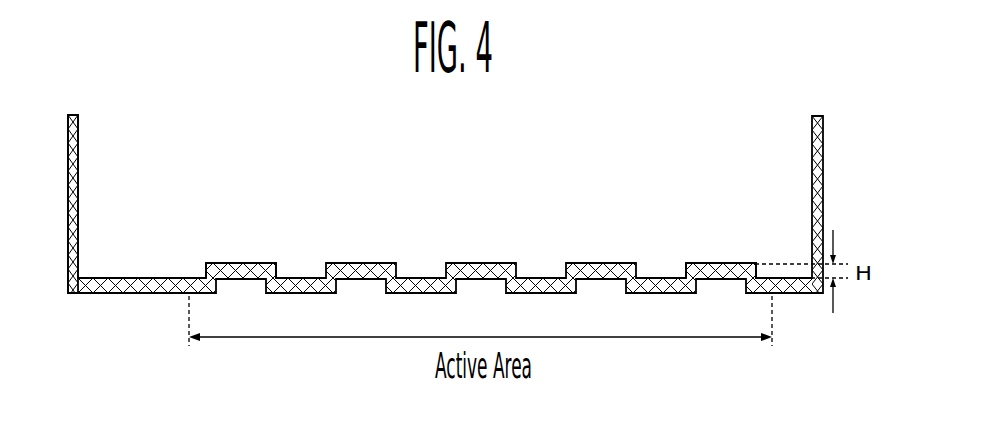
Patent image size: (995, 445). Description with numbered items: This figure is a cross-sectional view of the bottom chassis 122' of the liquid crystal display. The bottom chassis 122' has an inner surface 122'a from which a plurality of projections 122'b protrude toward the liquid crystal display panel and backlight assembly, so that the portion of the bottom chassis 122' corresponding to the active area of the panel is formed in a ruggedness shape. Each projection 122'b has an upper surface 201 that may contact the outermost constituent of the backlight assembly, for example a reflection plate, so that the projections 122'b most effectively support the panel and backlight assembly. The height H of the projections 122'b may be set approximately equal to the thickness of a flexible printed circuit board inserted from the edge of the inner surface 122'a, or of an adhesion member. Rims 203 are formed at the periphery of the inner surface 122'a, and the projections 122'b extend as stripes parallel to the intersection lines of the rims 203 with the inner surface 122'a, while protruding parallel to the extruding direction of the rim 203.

The rim 203 is at (83, 149).
The upper surface 201 is at (719, 255).
The bottom chassis 122' is at (445, 186).
The inner surface 122'a is at (147, 222).
The projection 122'b is at (241, 211).